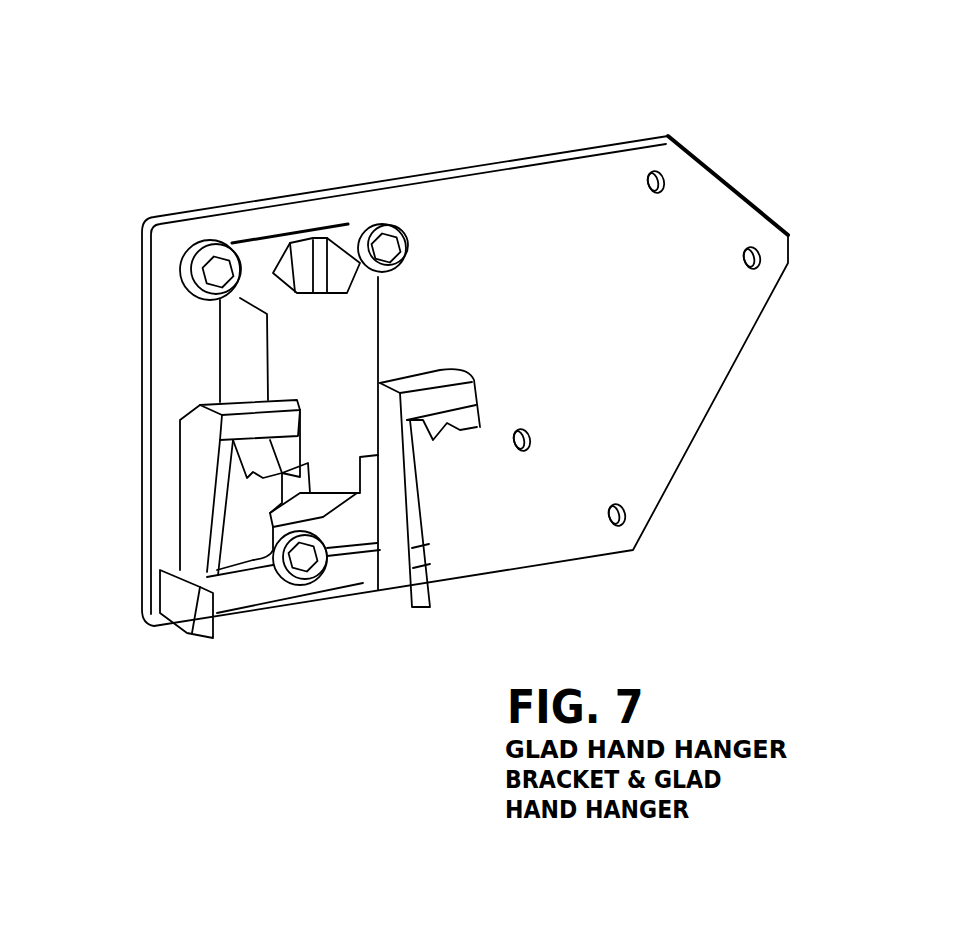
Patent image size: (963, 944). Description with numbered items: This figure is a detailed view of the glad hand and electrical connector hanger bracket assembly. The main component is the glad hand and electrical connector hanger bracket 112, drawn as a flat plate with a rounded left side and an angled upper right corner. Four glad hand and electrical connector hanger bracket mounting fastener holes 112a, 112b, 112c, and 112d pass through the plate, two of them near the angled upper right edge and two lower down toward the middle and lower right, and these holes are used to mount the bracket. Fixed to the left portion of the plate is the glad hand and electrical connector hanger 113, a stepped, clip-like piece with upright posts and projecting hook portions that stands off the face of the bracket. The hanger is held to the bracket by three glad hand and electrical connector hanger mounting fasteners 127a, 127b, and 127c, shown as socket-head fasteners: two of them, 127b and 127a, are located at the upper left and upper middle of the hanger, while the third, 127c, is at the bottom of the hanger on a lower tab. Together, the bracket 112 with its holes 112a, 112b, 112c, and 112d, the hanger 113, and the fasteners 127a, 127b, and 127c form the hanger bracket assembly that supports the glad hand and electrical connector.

The glad hand and electrical connector hanger bracket 112 is at (578, 182).
The hanger bracket mounting fastener hole 112a is at (667, 183).
The hanger bracket mounting fastener hole 112b is at (763, 258).
The hanger bracket mounting fastener hole 112c is at (533, 441).
The hanger bracket mounting fastener hole 112d is at (629, 518).
The glad hand and electrical connector hanger 113 is at (218, 347).
The hanger mounting fastener 127a is at (374, 220).
The hanger mounting fastener 127b is at (209, 252).
The hanger mounting fastener 127c is at (304, 580).